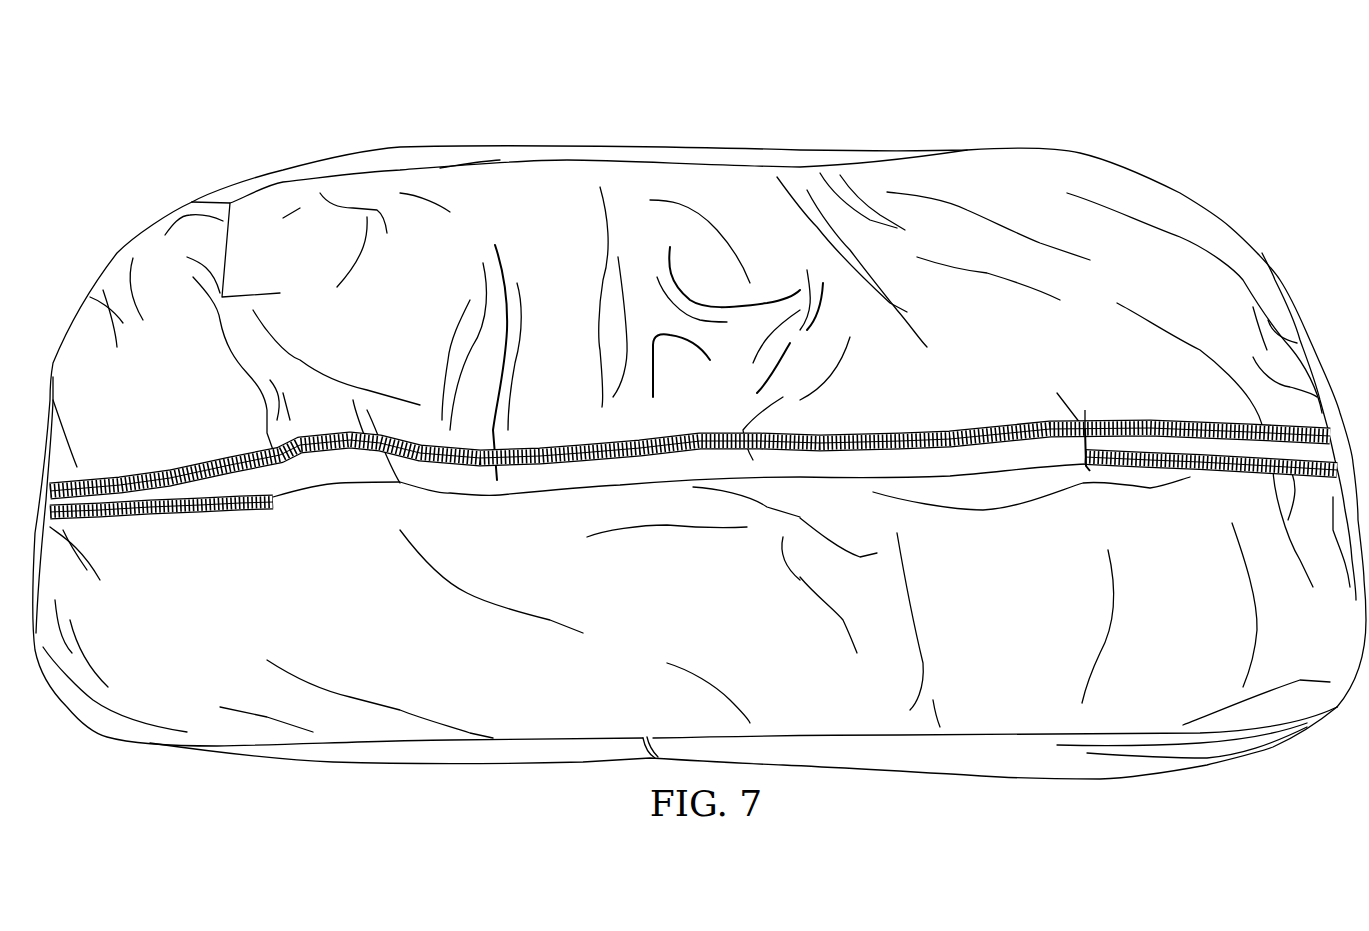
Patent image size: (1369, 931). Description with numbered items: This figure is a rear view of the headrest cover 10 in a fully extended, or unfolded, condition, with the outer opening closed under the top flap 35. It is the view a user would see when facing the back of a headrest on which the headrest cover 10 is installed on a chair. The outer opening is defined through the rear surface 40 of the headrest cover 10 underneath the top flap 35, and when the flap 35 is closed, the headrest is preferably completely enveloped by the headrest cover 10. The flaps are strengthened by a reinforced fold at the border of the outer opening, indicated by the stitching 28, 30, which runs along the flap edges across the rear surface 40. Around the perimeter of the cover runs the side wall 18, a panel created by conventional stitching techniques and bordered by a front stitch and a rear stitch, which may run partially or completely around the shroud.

The headrest cover 10 is at (552, 103).
The side wall 18 is at (1027, 767).
The stitching 28 is at (190, 473).
The stitching 30 is at (173, 513).
The top flap 35 is at (537, 483).
The rear surface 40 is at (974, 404).